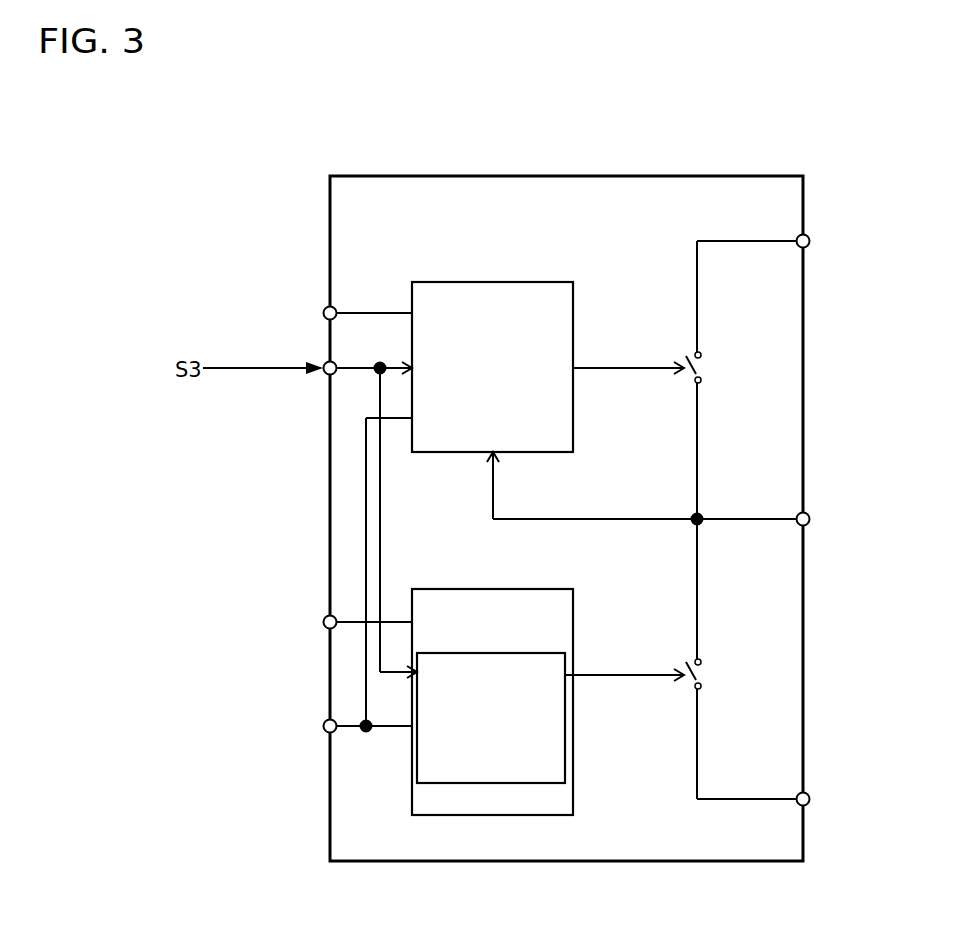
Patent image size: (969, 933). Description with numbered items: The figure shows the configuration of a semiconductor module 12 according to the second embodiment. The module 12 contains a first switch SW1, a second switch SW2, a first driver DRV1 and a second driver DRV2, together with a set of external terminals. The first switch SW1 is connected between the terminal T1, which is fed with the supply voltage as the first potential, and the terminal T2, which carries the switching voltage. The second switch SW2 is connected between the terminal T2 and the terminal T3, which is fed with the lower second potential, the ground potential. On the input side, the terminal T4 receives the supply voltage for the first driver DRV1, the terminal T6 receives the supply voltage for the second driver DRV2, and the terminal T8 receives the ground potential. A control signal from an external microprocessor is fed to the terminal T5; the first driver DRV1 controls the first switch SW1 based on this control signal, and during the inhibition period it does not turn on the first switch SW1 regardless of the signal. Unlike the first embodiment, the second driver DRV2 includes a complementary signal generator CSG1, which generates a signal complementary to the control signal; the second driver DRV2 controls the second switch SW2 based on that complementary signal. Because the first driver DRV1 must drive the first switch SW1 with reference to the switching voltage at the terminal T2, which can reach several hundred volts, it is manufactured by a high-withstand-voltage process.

The semiconductor module 12 is at (568, 177).
The first driver DRV1 is at (494, 282).
The second driver DRV2 is at (494, 589).
The complementary signal generator CSG1 is at (566, 702).
The first switch SW1 is at (706, 370).
The second switch SW2 is at (706, 677).
The terminal T1 is at (825, 257).
The terminal T2 is at (825, 535).
The terminal T3 is at (825, 815).
The terminal T4 is at (325, 319).
The terminal T5 is at (325, 375).
The terminal T6 is at (326, 627).
The terminal T8 is at (326, 731).